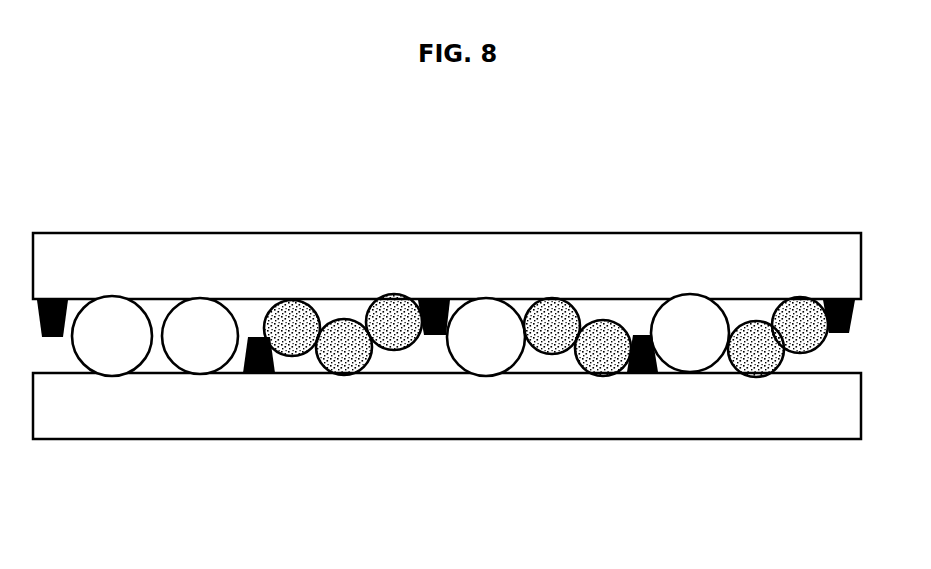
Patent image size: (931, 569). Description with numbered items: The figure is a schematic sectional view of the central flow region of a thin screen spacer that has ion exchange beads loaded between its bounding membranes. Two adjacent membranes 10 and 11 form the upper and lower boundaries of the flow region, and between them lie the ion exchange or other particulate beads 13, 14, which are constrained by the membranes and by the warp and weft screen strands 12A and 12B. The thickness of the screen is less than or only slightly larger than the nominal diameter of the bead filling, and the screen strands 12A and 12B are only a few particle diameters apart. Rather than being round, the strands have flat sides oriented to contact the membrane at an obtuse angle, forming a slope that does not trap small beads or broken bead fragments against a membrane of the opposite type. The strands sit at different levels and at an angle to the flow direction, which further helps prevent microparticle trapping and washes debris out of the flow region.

The membrane 10 is at (688, 263).
The membrane 11 is at (670, 418).
The warp screen strand 12A is at (48, 340).
The weft screen strand 12B is at (255, 373).
The ion exchange bead 13 is at (558, 328).
The ion exchange bead 14 is at (194, 327).